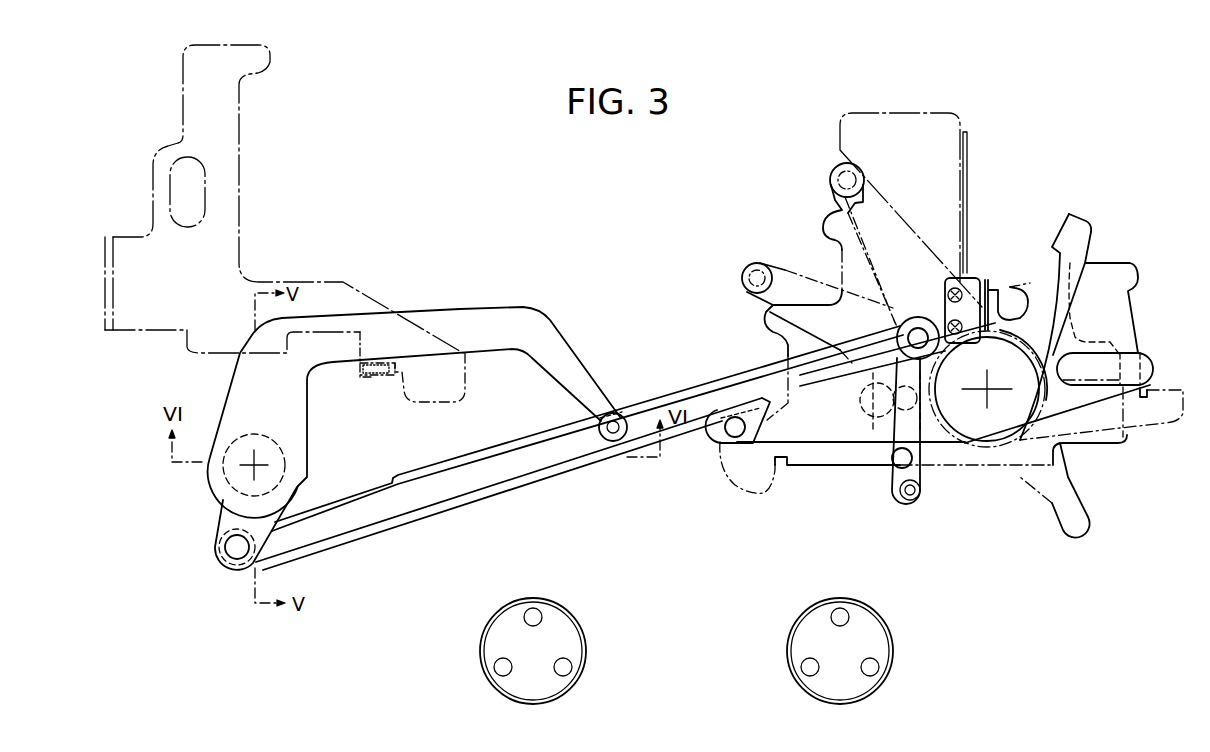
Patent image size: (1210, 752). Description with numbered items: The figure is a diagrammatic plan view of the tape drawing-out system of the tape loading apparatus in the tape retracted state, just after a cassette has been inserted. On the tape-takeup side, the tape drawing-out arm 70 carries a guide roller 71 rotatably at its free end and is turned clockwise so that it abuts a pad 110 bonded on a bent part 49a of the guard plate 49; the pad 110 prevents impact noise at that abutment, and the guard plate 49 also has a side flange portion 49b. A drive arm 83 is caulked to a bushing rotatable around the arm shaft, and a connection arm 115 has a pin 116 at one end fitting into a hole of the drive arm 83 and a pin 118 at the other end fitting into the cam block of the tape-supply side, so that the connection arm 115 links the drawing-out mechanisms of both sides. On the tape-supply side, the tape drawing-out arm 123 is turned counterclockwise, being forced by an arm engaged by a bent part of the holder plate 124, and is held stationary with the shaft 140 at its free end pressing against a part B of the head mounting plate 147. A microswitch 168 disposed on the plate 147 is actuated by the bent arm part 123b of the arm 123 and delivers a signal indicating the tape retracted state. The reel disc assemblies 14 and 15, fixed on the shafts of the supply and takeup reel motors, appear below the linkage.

The guard plate 49 is at (235, 258).
The bent part of guard plate 49a is at (362, 378).
The side flange of pressing plate 49b is at (107, 288).
The pad 110 is at (387, 379).
The tape drawing-out arm 70 is at (573, 348).
The guide roller 71 is at (611, 407).
The drive arm 83 is at (222, 510).
The pin 116 is at (233, 556).
The connection arm 115 is at (698, 392).
The shaft 140 is at (718, 436).
The part of head mounting plate B is at (732, 444).
The tape drawing-out arm 123 is at (830, 203).
The bent arm of tape drawing-out arm 123b is at (993, 281).
The pin 118 is at (915, 322).
The head mounting plate 147 is at (876, 113).
The microswitch 168 is at (978, 278).
The holder plate 124 is at (1130, 263).
The reel disc assembly 14 is at (880, 628).
The reel disc assembly 15 is at (495, 627).